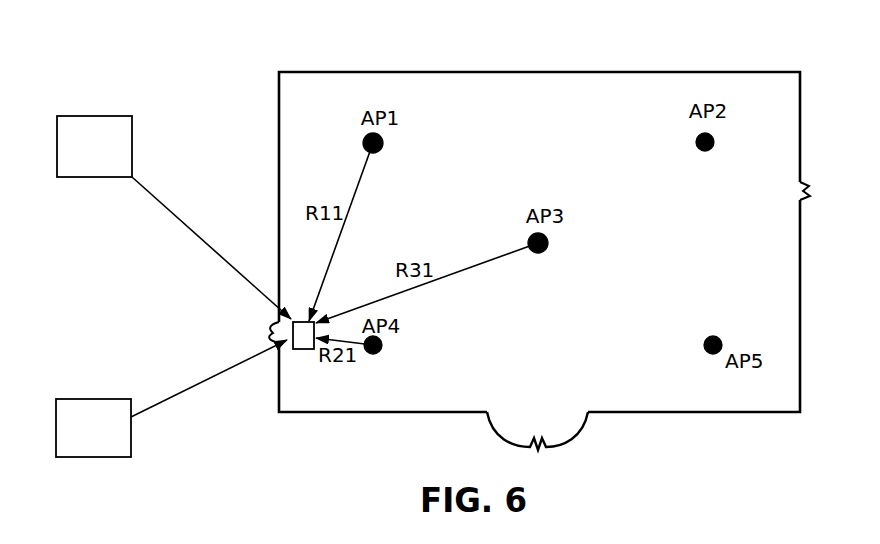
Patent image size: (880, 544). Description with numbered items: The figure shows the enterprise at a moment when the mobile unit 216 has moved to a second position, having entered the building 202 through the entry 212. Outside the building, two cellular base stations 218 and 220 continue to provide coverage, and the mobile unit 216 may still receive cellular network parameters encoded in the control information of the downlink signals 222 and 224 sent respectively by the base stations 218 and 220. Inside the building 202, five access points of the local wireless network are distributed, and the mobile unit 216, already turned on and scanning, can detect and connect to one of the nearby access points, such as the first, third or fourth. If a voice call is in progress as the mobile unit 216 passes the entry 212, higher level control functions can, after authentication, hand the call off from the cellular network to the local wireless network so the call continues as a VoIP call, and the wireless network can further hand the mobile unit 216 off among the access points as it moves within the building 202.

The building 202 is at (541, 72).
The entry 212 is at (262, 331).
The mobile unit 216 is at (301, 350).
The base station 218 is at (127, 114).
The base station 220 is at (129, 449).
The signal 222 is at (172, 208).
The signal 224 is at (197, 381).